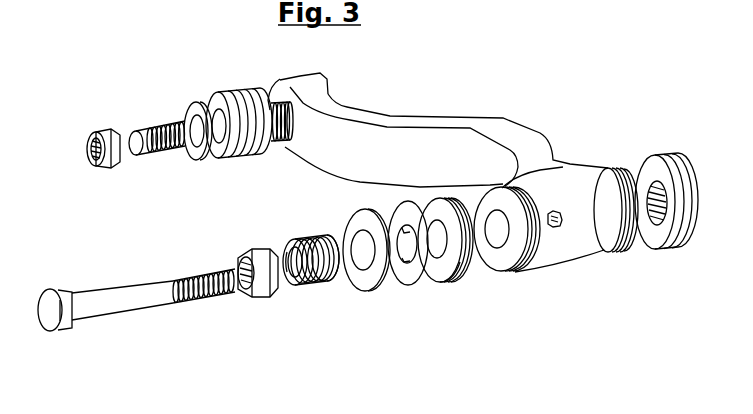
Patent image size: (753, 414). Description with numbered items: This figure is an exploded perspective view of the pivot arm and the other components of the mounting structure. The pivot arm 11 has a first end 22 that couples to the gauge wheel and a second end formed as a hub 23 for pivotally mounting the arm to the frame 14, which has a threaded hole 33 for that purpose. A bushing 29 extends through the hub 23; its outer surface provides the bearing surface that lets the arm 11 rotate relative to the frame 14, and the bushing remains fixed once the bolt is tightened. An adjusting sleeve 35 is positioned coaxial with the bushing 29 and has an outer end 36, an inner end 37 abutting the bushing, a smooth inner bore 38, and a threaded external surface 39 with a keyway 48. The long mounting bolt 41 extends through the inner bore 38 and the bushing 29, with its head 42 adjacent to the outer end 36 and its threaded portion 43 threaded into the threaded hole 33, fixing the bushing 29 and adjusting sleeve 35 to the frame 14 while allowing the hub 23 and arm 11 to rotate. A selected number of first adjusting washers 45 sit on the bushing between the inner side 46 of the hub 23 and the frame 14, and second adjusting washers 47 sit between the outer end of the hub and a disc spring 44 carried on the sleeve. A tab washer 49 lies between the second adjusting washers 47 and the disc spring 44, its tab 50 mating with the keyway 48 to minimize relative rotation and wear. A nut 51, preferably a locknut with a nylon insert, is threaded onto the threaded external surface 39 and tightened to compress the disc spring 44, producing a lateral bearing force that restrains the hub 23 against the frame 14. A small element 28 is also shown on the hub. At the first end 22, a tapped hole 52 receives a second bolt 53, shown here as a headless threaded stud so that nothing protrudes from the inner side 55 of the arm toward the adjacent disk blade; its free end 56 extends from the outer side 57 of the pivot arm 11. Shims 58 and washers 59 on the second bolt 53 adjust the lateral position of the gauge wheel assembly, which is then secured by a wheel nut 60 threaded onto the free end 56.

The pivot arm 11 is at (440, 127).
The frame 14 is at (676, 165).
The first end 22 is at (313, 78).
The hub 23 is at (572, 180).
The set screw 28 is at (556, 228).
The bushing 29 is at (498, 212).
The threaded hole 33 is at (650, 178).
The adjusting sleeve 35 is at (310, 282).
The outer end 36 is at (286, 252).
The inner end 37 is at (337, 279).
The inner bore 38 is at (292, 279).
The threaded external surface 39 is at (300, 246).
The mounting bolt 41 is at (128, 303).
The head 42 is at (53, 292).
The threaded portion 43 is at (200, 276).
The disc spring 44 is at (372, 293).
The first adjusting washers 45 is at (625, 242).
The inner side 46 is at (610, 250).
The second adjusting washers 47 is at (458, 280).
The keyway 48 is at (318, 243).
The tab washer 49 is at (452, 279).
The tab 50 is at (402, 263).
The nut 51 is at (265, 294).
The tapped hole 52 is at (283, 136).
The second bolt 53 is at (166, 127).
The inner side 55 is at (326, 80).
The free end 56 is at (134, 131).
The outer side 57 is at (279, 90).
The shims 58 is at (192, 101).
The washers 59 is at (246, 95).
The wheel nut 60 is at (95, 137).